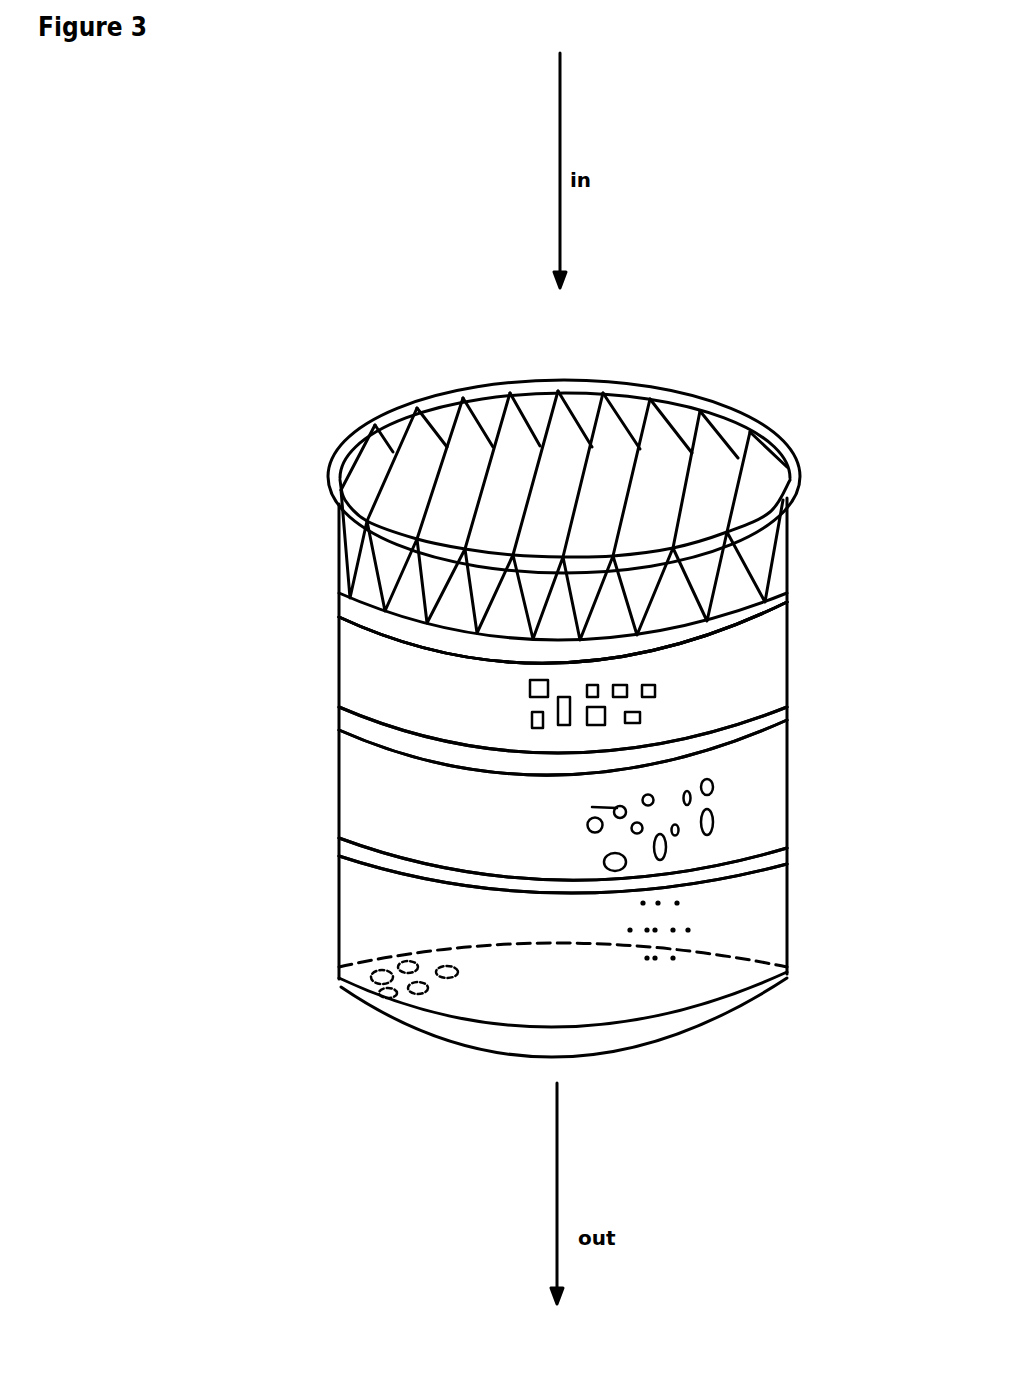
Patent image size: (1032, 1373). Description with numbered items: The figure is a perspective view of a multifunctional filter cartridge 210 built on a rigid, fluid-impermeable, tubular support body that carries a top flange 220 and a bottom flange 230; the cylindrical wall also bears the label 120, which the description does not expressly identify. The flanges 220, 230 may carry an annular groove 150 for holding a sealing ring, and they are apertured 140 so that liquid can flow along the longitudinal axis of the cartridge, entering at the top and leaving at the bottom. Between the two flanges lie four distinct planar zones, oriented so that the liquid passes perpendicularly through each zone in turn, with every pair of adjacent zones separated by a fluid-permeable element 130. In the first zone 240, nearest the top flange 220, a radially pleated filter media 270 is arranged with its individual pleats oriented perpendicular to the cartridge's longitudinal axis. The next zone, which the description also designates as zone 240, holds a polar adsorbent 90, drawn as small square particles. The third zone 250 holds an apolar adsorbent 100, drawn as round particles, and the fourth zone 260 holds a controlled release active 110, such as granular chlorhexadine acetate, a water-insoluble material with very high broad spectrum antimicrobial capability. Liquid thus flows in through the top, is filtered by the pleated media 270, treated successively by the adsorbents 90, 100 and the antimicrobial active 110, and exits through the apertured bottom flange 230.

The polar adsorbent 90 is at (640, 722).
The apolar adsorbent 100 is at (713, 818).
The controlled release active 110 is at (690, 930).
The filter housing 120 is at (337, 768).
The fluid-permeable element 130 is at (742, 626).
The apertures 140 is at (408, 988).
The annular groove 150 is at (683, 400).
The filter cartridge 210 is at (393, 668).
The top flange 220 is at (340, 443).
The bottom flange 230 is at (700, 1027).
The first zone 240 is at (357, 668).
The third zone 250 is at (367, 790).
The fourth zone 260 is at (367, 917).
The radially pleated filter media 270 is at (730, 485).